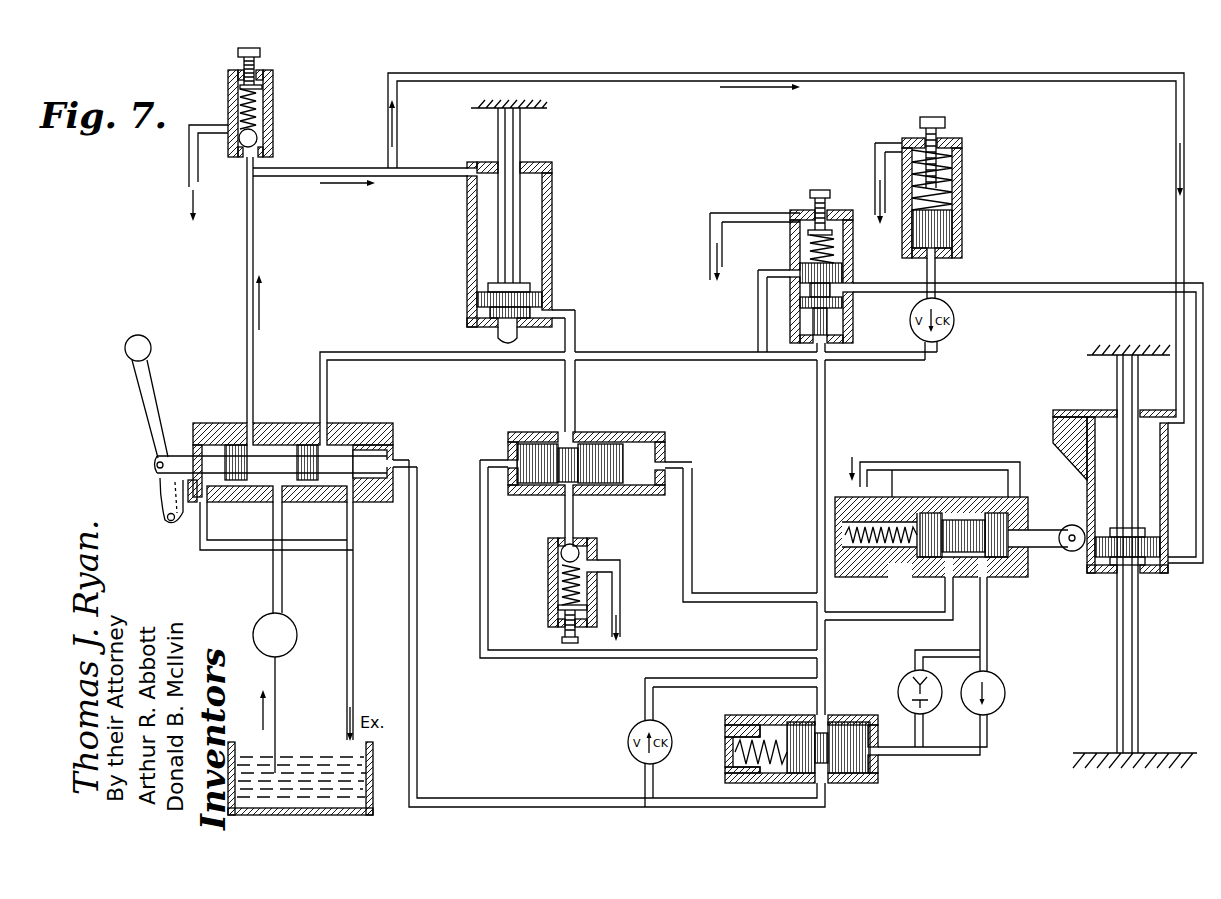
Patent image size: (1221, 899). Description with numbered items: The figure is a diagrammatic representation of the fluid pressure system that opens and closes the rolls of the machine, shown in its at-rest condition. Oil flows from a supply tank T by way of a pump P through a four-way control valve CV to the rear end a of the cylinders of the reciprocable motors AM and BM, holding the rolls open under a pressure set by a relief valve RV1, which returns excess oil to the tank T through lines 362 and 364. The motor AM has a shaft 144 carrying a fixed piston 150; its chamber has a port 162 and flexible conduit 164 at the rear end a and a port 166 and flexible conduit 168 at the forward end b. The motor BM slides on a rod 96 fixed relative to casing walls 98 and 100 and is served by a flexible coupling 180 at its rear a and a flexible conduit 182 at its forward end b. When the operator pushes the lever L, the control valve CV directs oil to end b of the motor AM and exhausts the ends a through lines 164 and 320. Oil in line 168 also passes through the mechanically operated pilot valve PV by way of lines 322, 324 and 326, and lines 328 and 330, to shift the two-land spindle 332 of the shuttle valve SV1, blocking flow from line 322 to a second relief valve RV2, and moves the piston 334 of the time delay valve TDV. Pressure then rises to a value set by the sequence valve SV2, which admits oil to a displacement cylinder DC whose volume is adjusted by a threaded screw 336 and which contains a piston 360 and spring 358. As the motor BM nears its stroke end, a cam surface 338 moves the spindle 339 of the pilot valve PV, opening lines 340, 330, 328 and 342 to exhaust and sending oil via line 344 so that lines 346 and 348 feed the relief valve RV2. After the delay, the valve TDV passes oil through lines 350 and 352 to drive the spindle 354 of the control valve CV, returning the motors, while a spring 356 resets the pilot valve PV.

The rod 96 is at (1144, 554).
The wall 98 is at (1100, 753).
The wall 100 is at (545, 112).
The shaft 144 is at (510, 148).
The piston 150 is at (530, 300).
The port 162 is at (492, 168).
The flexible conduit 164 is at (430, 177).
The port 166 is at (550, 313).
The flexible conduit 168 is at (568, 337).
The flexible coupling 180 is at (1176, 312).
The flexible conduit 182 is at (1188, 562).
The line 320 is at (1113, 73).
The line 322 is at (685, 360).
The line 324 is at (817, 473).
The line 326 is at (915, 623).
The line 328 is at (983, 628).
The line 330 is at (553, 655).
The two-land spindle 332 is at (535, 450).
The piston 334 is at (848, 733).
The threaded screw 336 is at (943, 132).
The cam surface 338 is at (1067, 448).
The spindle 339 is at (1050, 547).
The line 340 is at (915, 733).
The line 342 is at (967, 493).
The line 344 is at (742, 593).
The line 346 is at (573, 390).
The line 348 is at (573, 512).
The line 350 is at (817, 698).
The line 352 is at (563, 798).
The spindle 354 is at (358, 463).
The spring 356 is at (835, 533).
The spring 358 is at (943, 158).
The piston 360 is at (947, 228).
The line 362 is at (255, 162).
The line 364 is at (190, 171).
The relief valve RV1 is at (283, 107).
The relief valve RV2 is at (597, 547).
The reciprocable motor AM is at (544, 225).
The reciprocable motor BM is at (1099, 554).
The control valve CV is at (301, 446).
The shuttle valve SV1 is at (606, 447).
The sequence valve SV2 is at (800, 210).
The displacement cylinder DC is at (944, 205).
The pilot valve PV is at (926, 514).
The time delay valve TDV is at (836, 732).
The lever L is at (153, 377).
The pump P is at (275, 637).
The supply tank T is at (373, 786).
The rear end of chamber a is at (532, 182).
The forward end of chamber b is at (1103, 563).